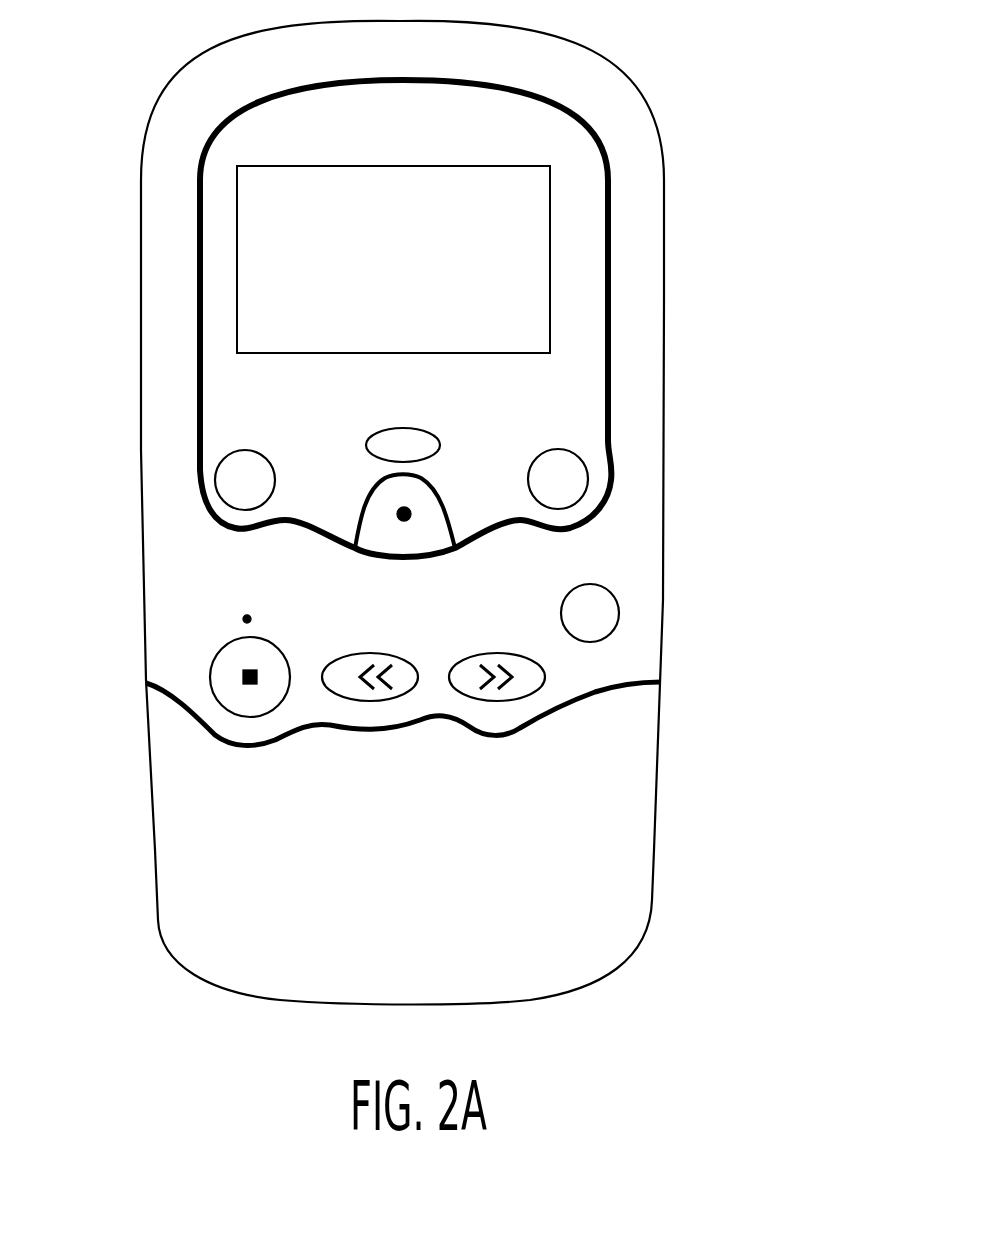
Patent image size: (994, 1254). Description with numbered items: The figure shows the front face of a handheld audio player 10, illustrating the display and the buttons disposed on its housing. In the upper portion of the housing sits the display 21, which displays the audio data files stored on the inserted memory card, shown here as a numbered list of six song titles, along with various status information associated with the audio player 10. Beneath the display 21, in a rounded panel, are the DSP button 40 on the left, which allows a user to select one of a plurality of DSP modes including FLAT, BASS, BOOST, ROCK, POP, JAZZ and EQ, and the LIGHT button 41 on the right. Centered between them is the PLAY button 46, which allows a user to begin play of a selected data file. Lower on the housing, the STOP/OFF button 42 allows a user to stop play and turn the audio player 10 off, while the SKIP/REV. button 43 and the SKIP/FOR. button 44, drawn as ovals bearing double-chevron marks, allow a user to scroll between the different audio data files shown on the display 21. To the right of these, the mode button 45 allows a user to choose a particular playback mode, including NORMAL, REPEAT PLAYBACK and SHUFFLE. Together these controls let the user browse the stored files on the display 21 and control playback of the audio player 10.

The audio player 10 is at (712, 113).
The display 21 is at (373, 166).
The DSP button 40 is at (248, 481).
The LIGHT button 41 is at (575, 485).
The STOP/OFF button 42 is at (240, 672).
The SKIP/REV. button 43 is at (360, 697).
The SKIP/FOR. button 44 is at (513, 692).
The mode button 45 is at (610, 617).
The PLAY button 46 is at (403, 513).